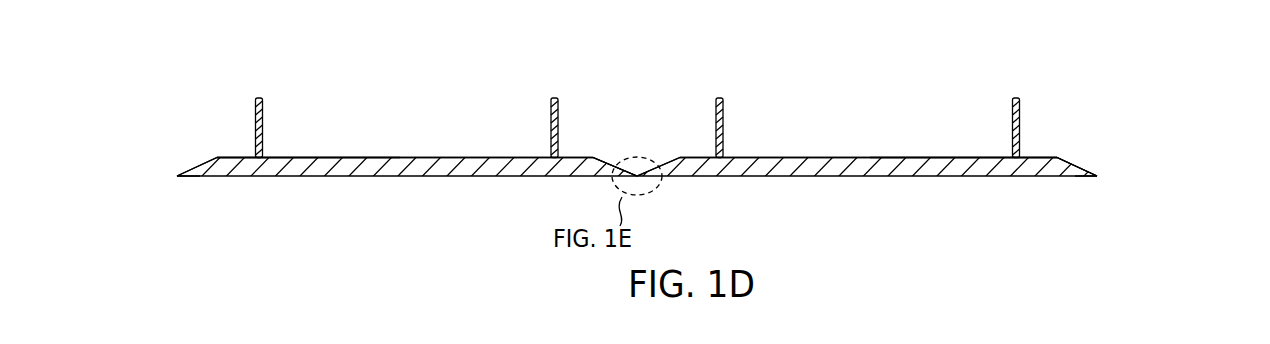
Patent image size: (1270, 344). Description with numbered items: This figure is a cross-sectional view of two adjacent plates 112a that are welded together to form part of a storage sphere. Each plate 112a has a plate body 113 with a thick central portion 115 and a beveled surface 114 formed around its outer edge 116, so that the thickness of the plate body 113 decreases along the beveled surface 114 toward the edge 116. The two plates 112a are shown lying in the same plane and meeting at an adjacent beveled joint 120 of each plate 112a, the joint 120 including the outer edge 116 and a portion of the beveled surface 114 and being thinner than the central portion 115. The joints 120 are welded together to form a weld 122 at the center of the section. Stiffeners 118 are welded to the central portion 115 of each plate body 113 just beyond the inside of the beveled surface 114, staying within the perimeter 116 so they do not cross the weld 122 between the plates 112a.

The plate 112a is at (204, 119).
The plate body 113 is at (303, 183).
The beveled surface 114 is at (611, 161).
The central portion 115 is at (459, 150).
The outer edge 116 is at (177, 176).
The stiffener 118 is at (259, 97).
The beveled joint 120 is at (171, 154).
The weld 122 is at (639, 173).